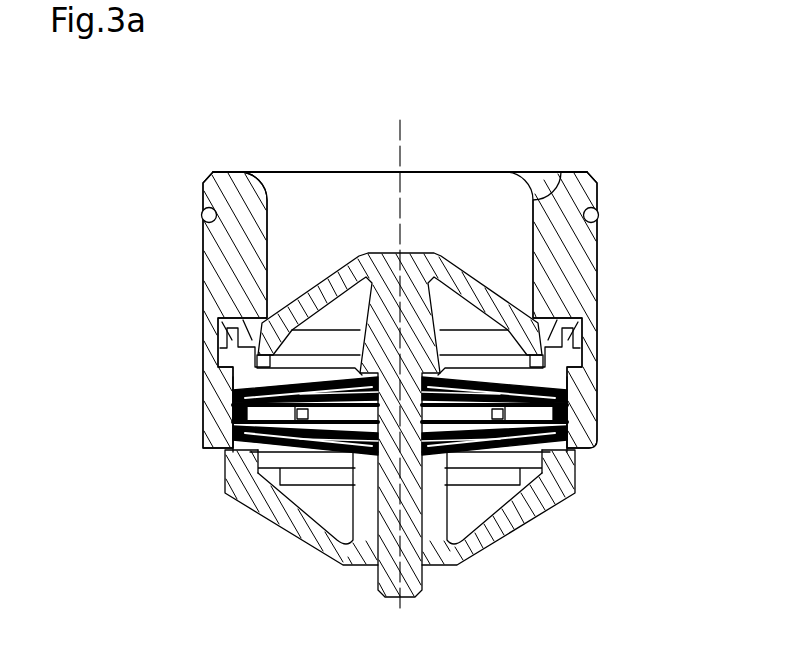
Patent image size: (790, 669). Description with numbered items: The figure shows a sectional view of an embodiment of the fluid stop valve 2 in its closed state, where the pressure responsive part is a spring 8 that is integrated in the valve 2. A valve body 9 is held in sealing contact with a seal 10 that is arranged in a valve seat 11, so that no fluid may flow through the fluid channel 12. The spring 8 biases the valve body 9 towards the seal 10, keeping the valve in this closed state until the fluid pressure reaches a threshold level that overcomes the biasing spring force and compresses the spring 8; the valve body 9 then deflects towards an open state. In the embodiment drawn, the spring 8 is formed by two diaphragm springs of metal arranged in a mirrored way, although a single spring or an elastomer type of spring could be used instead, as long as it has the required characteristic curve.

The fluid stop valve 2 is at (170, 284).
The spring 8 is at (540, 465).
The valve body 9 is at (418, 272).
The seal 10 is at (557, 322).
The valve seat 11 is at (263, 320).
The fluid channel 12 is at (318, 225).